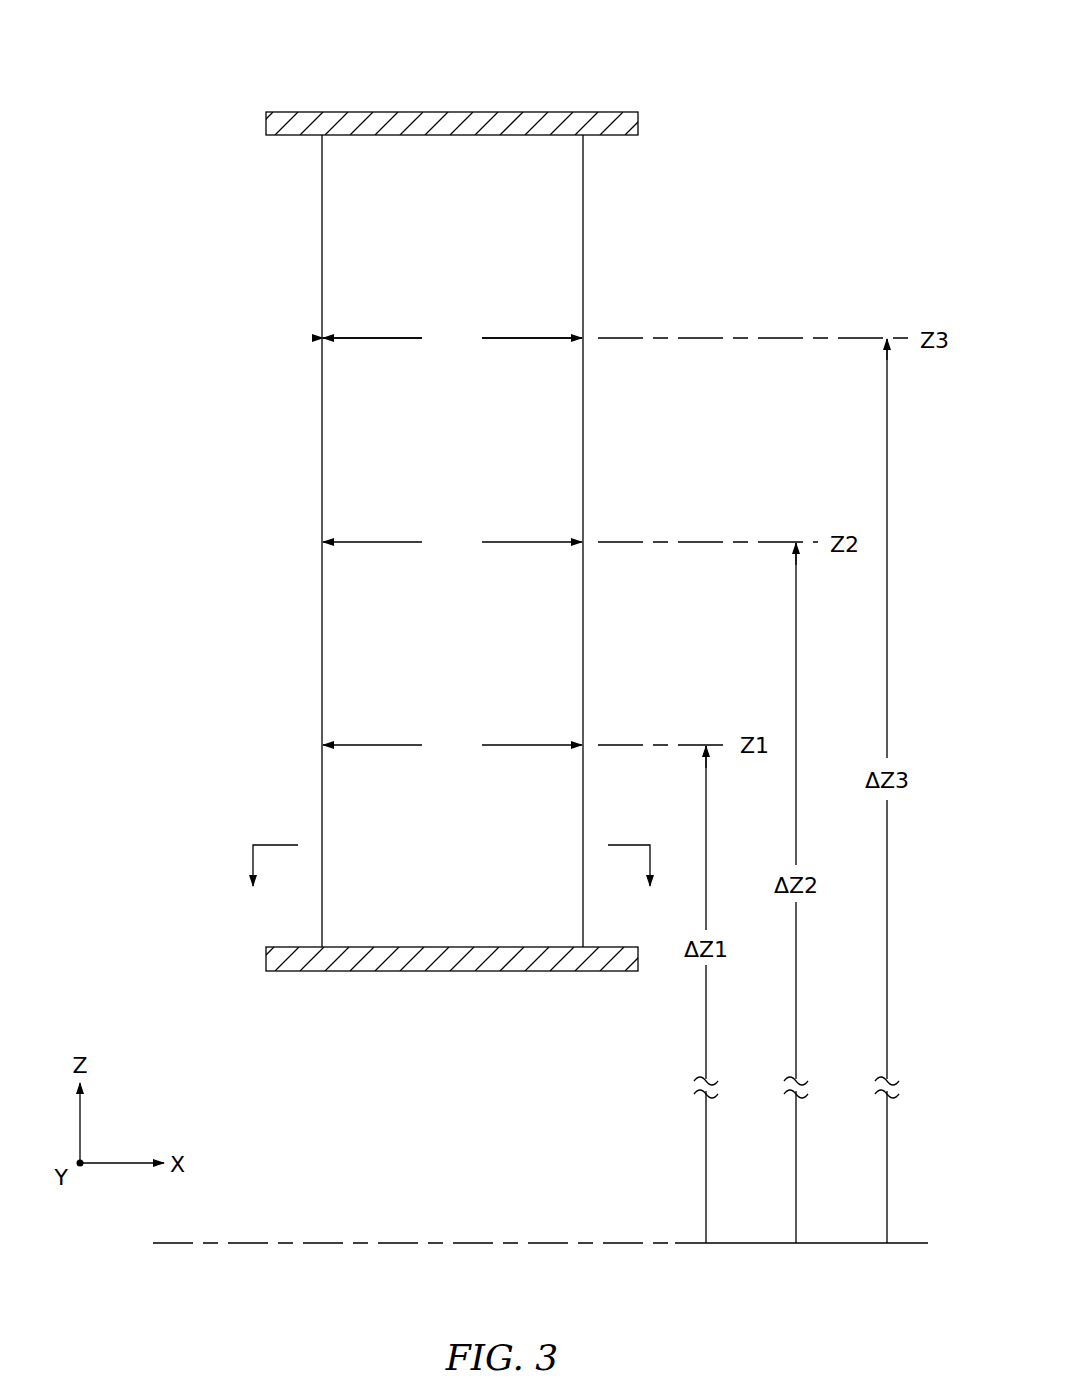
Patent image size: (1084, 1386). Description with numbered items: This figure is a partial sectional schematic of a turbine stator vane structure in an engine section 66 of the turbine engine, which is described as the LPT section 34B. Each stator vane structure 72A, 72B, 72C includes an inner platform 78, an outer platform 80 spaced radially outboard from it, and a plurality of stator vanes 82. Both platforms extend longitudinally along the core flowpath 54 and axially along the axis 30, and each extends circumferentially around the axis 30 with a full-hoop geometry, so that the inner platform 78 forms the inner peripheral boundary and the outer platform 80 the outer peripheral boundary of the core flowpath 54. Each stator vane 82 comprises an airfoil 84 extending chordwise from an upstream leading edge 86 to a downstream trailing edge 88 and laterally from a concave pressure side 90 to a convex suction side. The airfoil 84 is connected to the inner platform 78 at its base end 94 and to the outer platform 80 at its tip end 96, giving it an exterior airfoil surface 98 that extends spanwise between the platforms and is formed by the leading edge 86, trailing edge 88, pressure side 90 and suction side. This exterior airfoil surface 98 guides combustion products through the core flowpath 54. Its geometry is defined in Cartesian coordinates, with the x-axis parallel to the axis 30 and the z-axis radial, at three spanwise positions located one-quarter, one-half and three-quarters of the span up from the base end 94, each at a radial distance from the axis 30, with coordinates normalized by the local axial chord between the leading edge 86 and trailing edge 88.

The axis 30 is at (168, 1243).
The LPT section 34B is at (400, 524).
The engine section 66 is at (434, 524).
The core flowpath 54 is at (434, 544).
The stator vane structure 72A is at (434, 524).
The stator vane structure 72B is at (434, 524).
The stator vane structure 72C is at (434, 524).
The inner platform 78 is at (449, 997).
The outer platform 80 is at (449, 87).
The stator vane 82 is at (649, 541).
The airfoil 84 is at (591, 237).
The leading edge 86 is at (271, 541).
The trailing edge 88 is at (649, 541).
The pressure side 90 is at (438, 252).
The base end 94 is at (380, 972).
The tip end 96 is at (380, 130).
The exterior airfoil surface 98 is at (311, 490).